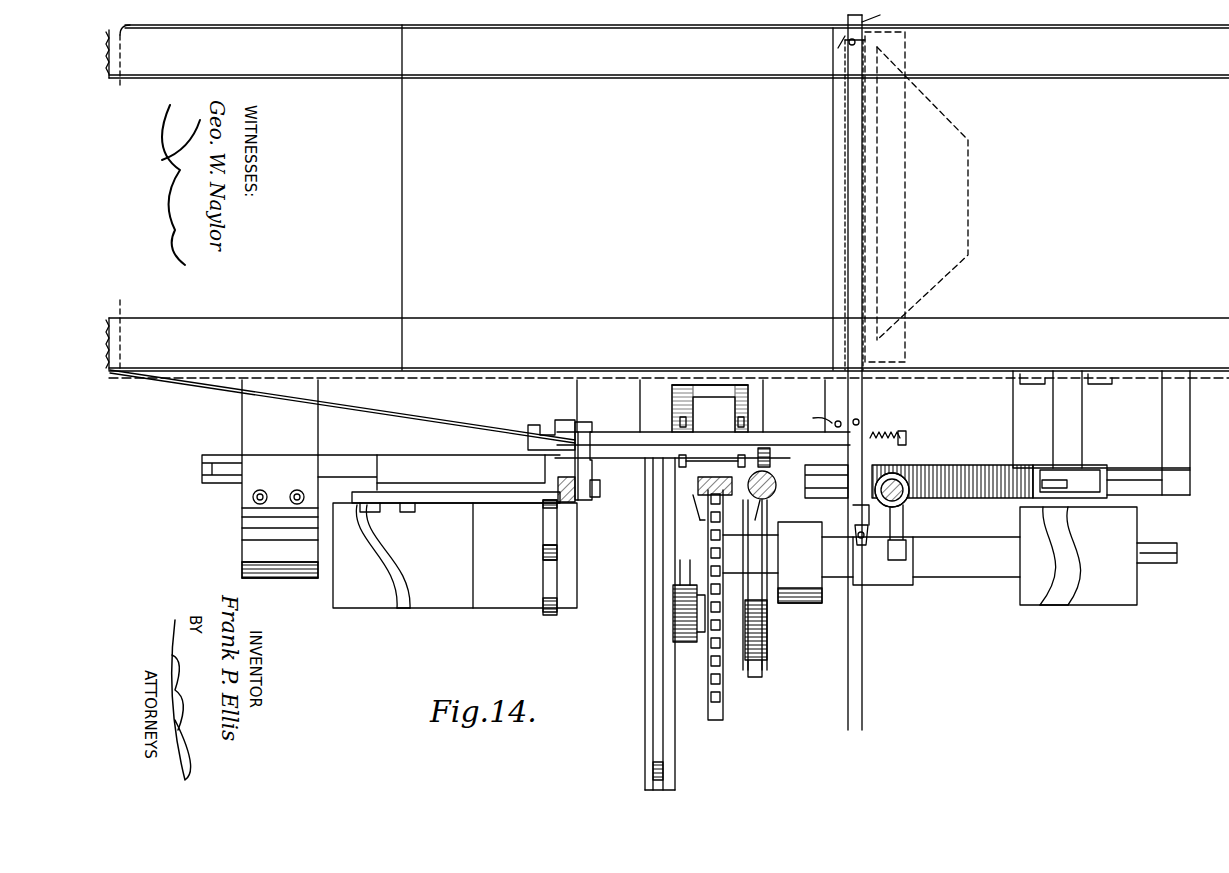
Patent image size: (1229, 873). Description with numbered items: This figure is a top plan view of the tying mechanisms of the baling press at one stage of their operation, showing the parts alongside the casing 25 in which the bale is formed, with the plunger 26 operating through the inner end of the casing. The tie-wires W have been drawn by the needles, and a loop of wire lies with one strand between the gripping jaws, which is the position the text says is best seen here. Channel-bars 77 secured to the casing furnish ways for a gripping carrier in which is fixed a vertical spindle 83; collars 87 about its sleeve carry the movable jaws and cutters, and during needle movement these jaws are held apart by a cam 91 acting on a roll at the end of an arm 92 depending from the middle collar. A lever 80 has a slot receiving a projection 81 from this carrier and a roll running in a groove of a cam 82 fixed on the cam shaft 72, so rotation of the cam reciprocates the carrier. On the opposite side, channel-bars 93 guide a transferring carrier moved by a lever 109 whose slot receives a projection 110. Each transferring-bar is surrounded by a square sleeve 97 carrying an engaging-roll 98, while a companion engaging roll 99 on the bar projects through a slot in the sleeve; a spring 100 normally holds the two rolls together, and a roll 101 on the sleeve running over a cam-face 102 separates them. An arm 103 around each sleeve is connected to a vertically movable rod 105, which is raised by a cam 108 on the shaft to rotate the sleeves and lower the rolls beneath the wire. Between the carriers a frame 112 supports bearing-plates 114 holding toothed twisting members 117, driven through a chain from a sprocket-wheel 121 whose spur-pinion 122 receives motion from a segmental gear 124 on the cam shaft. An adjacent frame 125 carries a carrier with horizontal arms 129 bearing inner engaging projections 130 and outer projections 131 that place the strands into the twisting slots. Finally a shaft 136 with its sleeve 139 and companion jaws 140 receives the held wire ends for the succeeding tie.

The casing 25 is at (667, 198).
The plunger 26 is at (962, 203).
The tie-wires W is at (865, 383).
The channel-bars 77 is at (1180, 495).
The channel-bars 93 is at (425, 455).
The lever 109 is at (437, 492).
The roll 101 is at (450, 563).
The cam-face 102 is at (565, 430).
The sleeve 97 is at (612, 432).
The arm 103 is at (600, 486).
The rod 105 is at (570, 502).
The projection 110 is at (540, 510).
The cam 108 is at (550, 612).
The engaging projection 130 is at (736, 422).
The horizontal arms 129 is at (736, 388).
The projections 131 is at (738, 470).
The bearing-plates 114 is at (718, 502).
The twisting members 117 is at (688, 510).
The companion jaws 140 is at (765, 448).
The shaft 136 is at (777, 484).
The sleeve 139 is at (770, 498).
The segmental gear 124 is at (645, 580).
The frame 125 is at (645, 742).
The sprocket-wheel 121 is at (723, 712).
The spur-pinion 122 is at (673, 632).
The frame 112 is at (767, 640).
The cam 91 is at (908, 585).
The arm 92 is at (870, 533).
The spindle 83 is at (905, 465).
The collars 87 is at (905, 500).
The lever 80 is at (1080, 470).
The projection 81 is at (1050, 480).
The cam 82 is at (1078, 556).
The cam shaft 72 is at (1165, 563).
The spring 100 is at (906, 438).
The engaging-roll 98 is at (859, 422).
The engaging roll 99 is at (820, 412).